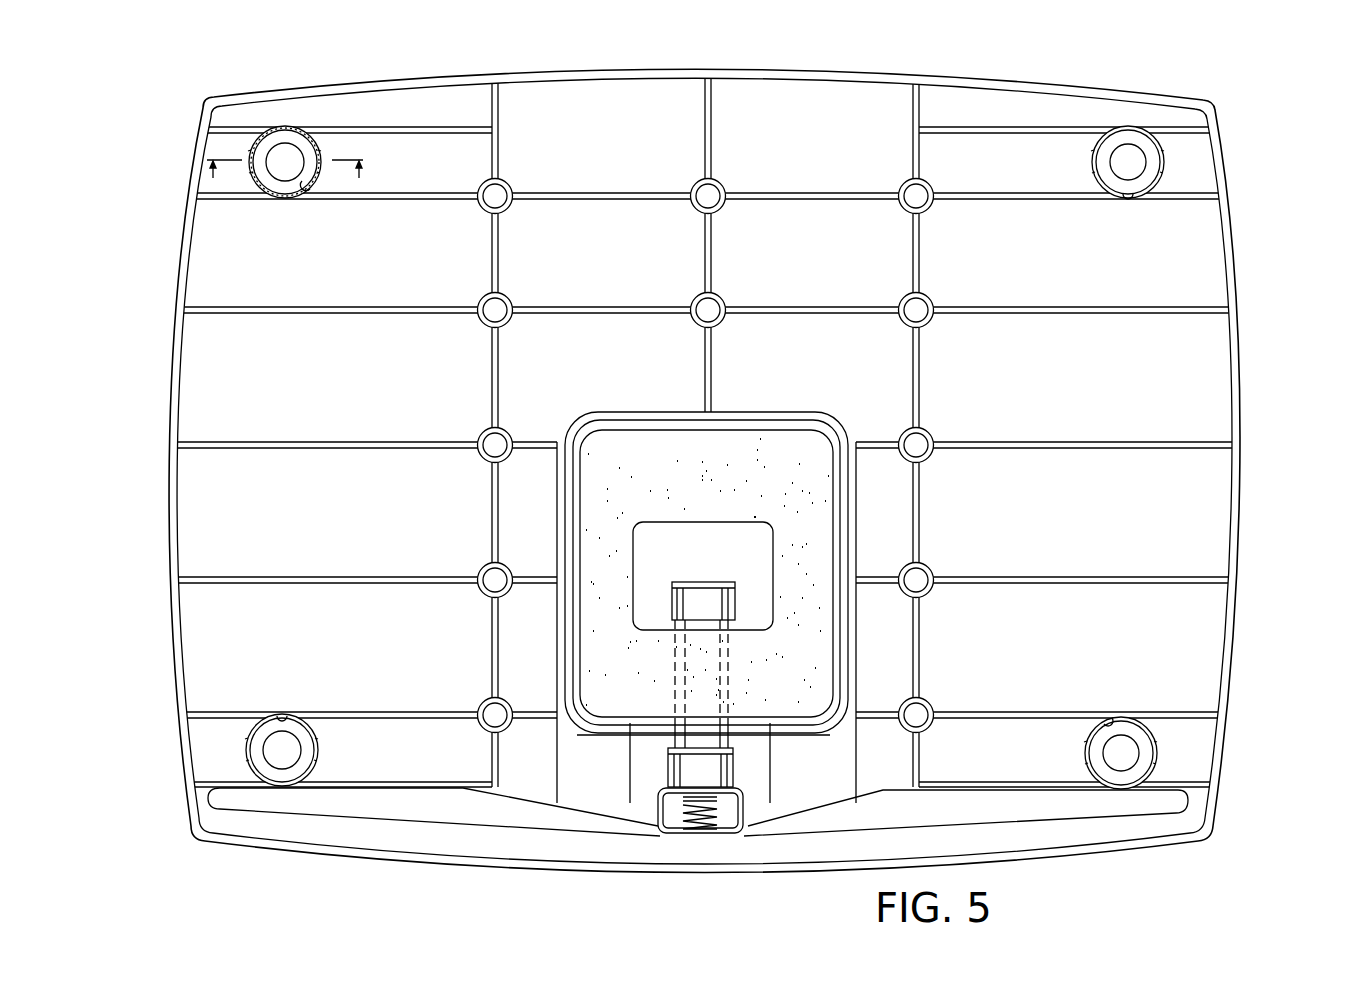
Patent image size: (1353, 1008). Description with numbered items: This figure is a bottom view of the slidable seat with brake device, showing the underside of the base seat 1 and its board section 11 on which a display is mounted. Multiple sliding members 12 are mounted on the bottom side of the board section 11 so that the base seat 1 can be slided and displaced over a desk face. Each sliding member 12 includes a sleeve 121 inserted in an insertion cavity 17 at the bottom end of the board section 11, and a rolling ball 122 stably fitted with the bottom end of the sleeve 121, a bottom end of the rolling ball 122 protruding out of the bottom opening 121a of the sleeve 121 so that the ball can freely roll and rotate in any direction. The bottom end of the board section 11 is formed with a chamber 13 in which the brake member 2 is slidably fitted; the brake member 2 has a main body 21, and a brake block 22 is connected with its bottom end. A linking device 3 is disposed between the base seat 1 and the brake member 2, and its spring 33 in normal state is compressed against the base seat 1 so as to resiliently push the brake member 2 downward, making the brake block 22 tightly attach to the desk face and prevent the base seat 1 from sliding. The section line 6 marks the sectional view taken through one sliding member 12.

The base seat 1 is at (160, 383).
The board section 11 is at (172, 500).
The sliding member 12 is at (699, 425).
The sleeve 121 is at (260, 144).
The bottom opening 121a is at (262, 145).
The rolling ball 122 is at (282, 166).
The insertion cavity 17 is at (307, 187).
The chamber 13 is at (604, 440).
The main body 21 is at (790, 438).
The brake block 22 is at (802, 485).
The brake member 2 is at (606, 531).
The linking device 3 is at (742, 710).
The spring 33 is at (686, 797).
The section line 6- 6 is at (285, 177).